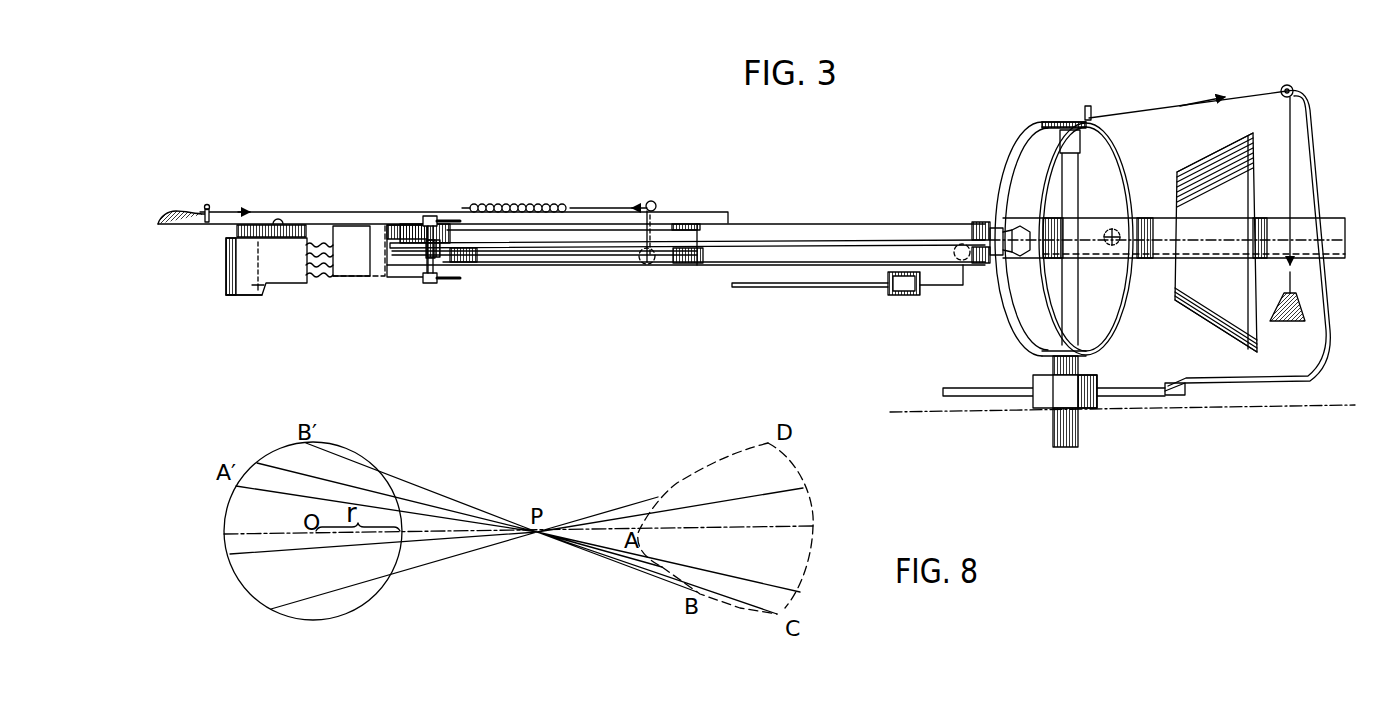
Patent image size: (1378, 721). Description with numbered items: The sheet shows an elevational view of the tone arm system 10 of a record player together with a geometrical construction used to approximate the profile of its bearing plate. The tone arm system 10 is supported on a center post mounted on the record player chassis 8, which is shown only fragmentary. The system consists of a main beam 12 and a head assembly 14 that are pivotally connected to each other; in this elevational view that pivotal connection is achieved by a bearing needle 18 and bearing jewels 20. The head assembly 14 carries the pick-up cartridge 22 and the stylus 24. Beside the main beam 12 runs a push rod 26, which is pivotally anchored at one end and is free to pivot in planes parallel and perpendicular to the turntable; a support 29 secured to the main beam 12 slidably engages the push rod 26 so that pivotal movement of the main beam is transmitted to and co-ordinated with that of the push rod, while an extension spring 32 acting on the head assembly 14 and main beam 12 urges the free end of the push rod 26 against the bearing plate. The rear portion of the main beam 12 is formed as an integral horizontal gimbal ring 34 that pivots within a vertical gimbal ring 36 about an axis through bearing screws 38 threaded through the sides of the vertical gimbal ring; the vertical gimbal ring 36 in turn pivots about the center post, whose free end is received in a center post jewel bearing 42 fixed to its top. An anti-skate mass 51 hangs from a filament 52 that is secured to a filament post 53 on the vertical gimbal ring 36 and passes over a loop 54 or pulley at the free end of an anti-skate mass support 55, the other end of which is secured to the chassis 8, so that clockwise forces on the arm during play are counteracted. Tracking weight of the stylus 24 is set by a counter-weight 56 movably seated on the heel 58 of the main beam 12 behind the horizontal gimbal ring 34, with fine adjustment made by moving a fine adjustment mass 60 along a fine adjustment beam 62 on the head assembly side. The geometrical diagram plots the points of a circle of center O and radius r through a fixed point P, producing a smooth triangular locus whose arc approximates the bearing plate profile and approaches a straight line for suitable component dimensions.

The record player chassis 8 is at (1130, 396).
The tone arm system 10 is at (720, 202).
The main beam 12 is at (820, 233).
The head assembly 14 is at (310, 224).
The bearing needle 18 is at (418, 240).
The bearing jewels 20 is at (440, 218).
The pick-up cartridge 22 is at (290, 276).
The stylus 24 is at (230, 302).
The push rod 26 is at (895, 243).
The support 29 is at (597, 256).
The extension spring 32 is at (570, 207).
The horizontal gimbal ring 34 is at (1110, 300).
The vertical gimbal ring 36 is at (1030, 130).
The bearing screws 38 is at (990, 282).
The center post jewel bearing 42 is at (1082, 133).
The anti-skate mass 51 is at (1292, 310).
The filament 52 is at (1187, 105).
The filament post 53 is at (1090, 106).
The loop 54 is at (1294, 89).
The anti-skate mass support 55 is at (1312, 152).
The counter-weight 56 is at (1238, 306).
The heel 58 is at (1338, 228).
The fine adjustment mass 60 is at (910, 296).
The fine adjustment beam 62 is at (818, 288).